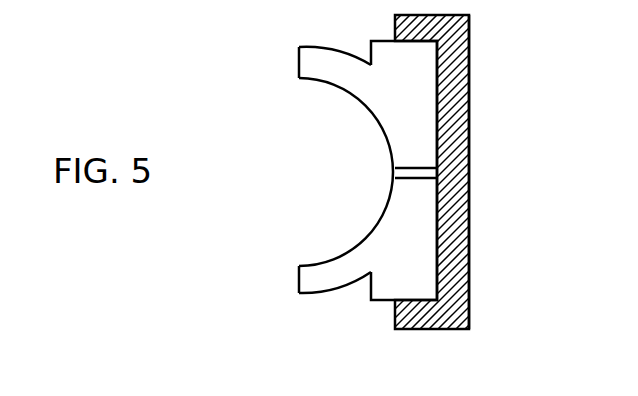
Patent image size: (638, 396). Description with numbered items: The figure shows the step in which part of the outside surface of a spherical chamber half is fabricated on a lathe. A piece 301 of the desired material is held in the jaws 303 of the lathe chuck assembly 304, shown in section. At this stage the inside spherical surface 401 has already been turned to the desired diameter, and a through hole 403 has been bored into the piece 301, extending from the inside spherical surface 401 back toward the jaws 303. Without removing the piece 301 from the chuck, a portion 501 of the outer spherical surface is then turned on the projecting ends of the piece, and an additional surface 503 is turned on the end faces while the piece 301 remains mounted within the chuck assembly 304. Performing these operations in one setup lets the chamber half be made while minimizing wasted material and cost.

The piece 301 is at (403, 100).
The jaws 303 is at (408, 317).
The lathe chuck assembly 304 is at (469, 263).
The inside spherical surface 401 is at (368, 112).
The through hole 403 is at (395, 173).
The portion of the outer spherical surface 501 is at (325, 47).
The surface 503 is at (299, 71).